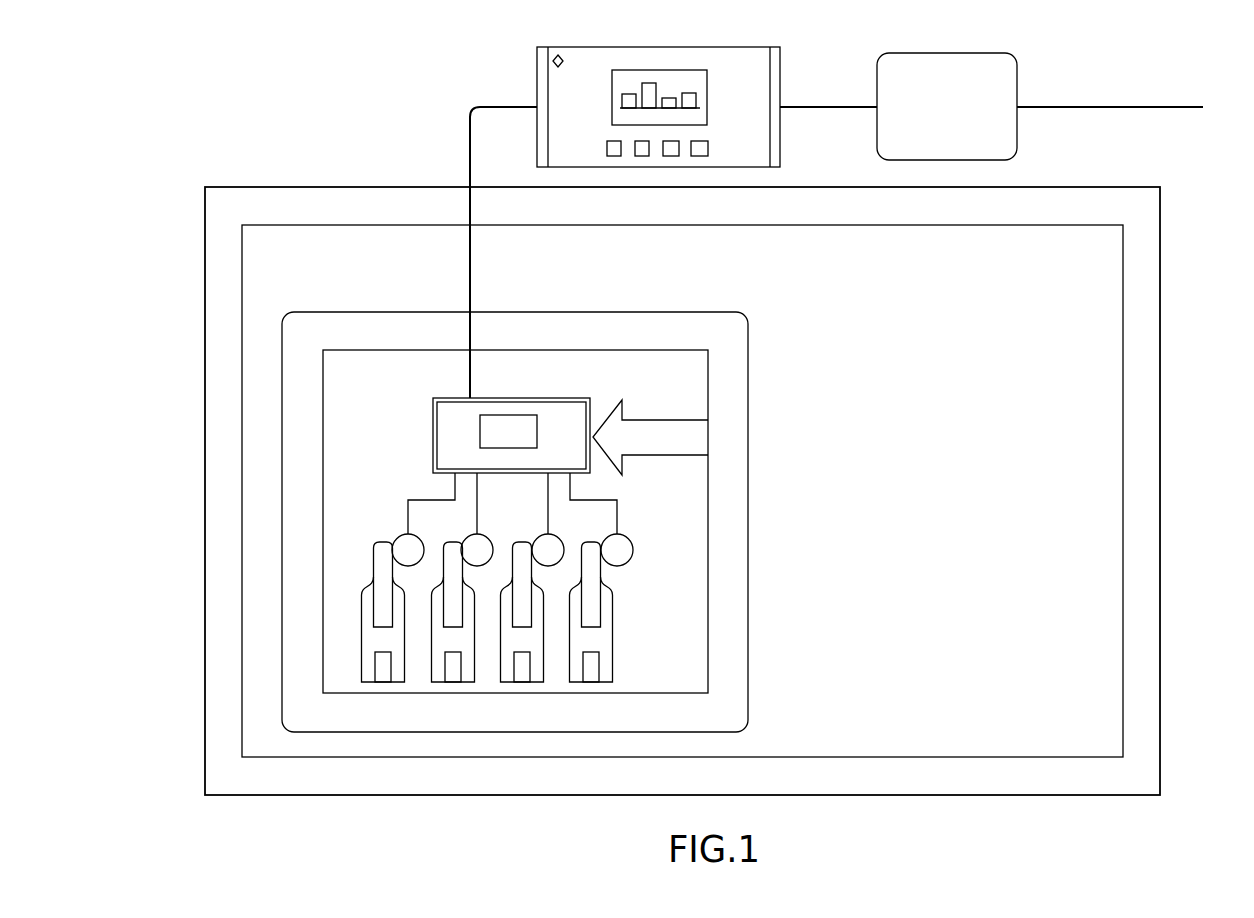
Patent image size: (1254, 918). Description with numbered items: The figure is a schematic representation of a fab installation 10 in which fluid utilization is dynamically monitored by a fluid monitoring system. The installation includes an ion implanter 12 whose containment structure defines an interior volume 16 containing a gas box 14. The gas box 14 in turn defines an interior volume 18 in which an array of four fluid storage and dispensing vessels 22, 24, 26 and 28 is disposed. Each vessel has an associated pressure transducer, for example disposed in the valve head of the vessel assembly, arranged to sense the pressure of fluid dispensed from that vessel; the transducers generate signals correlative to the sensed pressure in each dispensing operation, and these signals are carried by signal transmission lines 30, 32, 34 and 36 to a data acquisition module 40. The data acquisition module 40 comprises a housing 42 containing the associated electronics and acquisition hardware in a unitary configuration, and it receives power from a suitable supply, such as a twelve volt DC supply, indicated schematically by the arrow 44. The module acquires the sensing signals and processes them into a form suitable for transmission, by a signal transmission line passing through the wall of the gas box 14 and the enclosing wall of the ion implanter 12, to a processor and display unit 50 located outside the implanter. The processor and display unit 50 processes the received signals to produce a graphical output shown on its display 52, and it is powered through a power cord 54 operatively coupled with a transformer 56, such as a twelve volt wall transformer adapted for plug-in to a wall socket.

The fab installation 10 is at (257, 140).
The ion implanter 12 is at (1140, 394).
The gas box 14 is at (722, 646).
The interior volume 16 is at (955, 476).
The interior volume 18 is at (683, 588).
The fluid storage and dispensing vessel 22 is at (608, 661).
The fluid storage and dispensing vessel 24 is at (533, 662).
The fluid storage and dispensing vessel 26 is at (438, 662).
The fluid storage and dispensing vessel 28 is at (367, 663).
The signal transmission line 30 is at (620, 520).
The signal transmission line 32 is at (549, 531).
The signal transmission line 34 is at (472, 531).
The signal transmission line 36 is at (405, 525).
The data acquisition module 40 is at (452, 396).
The housing 42 is at (512, 430).
The power supply arrow 44 is at (655, 420).
The processor and display unit 50 is at (555, 87).
The display 52 is at (665, 90).
The power cord 54 is at (1150, 105).
The transformer 56 is at (1017, 78).